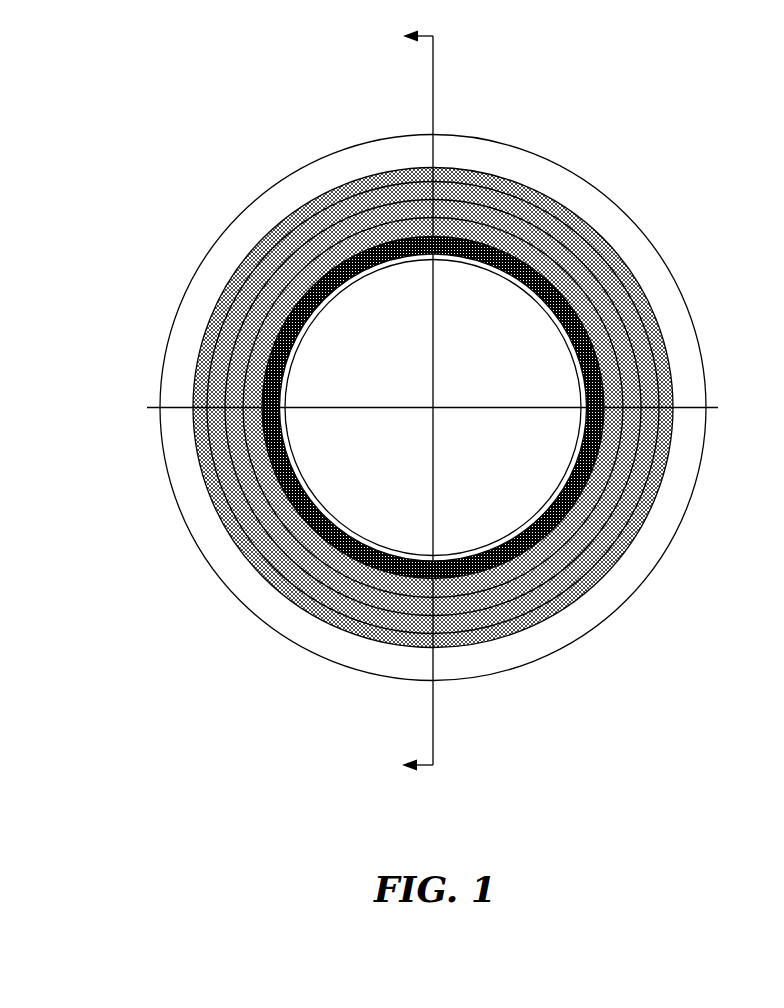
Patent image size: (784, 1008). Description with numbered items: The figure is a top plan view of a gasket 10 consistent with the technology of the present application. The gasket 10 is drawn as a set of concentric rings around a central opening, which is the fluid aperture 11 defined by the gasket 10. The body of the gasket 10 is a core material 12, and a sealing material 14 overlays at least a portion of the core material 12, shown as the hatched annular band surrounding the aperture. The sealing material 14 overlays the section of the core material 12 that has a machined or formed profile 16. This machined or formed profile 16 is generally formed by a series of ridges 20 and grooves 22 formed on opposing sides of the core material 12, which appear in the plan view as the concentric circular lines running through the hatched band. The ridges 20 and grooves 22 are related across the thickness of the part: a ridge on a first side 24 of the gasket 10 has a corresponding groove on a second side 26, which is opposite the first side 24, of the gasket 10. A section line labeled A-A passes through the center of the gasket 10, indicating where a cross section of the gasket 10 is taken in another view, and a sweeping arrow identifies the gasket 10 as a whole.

The gasket 10 is at (231, 712).
The fluid aperture 11 is at (485, 392).
The core material 12 is at (591, 204).
The sealing material 14 is at (283, 262).
The machined or formed profile 16 is at (670, 344).
The ridges 20 is at (588, 594).
The grooves 22 is at (600, 582).
The first side 24 is at (666, 503).
The second side 26 is at (708, 500).